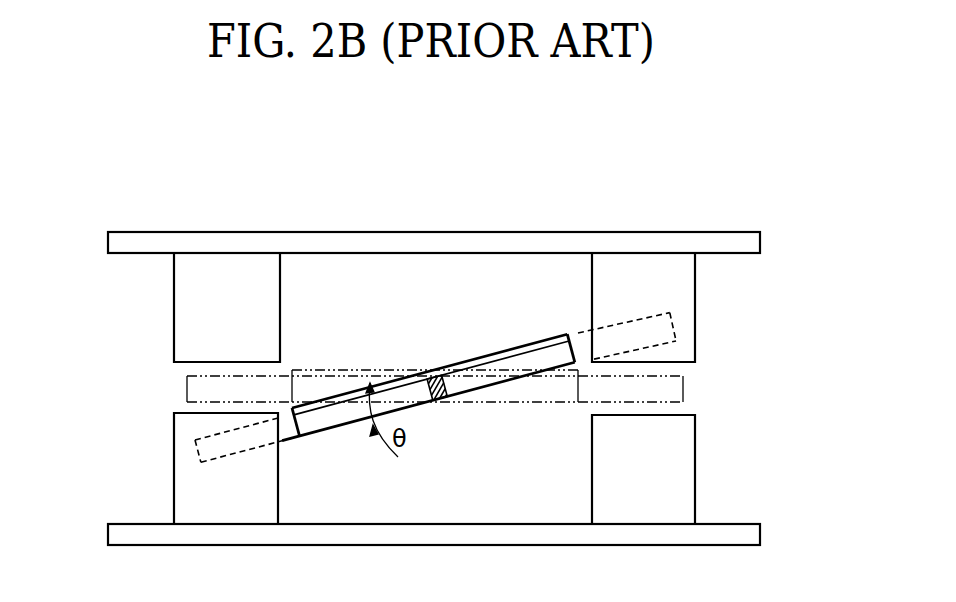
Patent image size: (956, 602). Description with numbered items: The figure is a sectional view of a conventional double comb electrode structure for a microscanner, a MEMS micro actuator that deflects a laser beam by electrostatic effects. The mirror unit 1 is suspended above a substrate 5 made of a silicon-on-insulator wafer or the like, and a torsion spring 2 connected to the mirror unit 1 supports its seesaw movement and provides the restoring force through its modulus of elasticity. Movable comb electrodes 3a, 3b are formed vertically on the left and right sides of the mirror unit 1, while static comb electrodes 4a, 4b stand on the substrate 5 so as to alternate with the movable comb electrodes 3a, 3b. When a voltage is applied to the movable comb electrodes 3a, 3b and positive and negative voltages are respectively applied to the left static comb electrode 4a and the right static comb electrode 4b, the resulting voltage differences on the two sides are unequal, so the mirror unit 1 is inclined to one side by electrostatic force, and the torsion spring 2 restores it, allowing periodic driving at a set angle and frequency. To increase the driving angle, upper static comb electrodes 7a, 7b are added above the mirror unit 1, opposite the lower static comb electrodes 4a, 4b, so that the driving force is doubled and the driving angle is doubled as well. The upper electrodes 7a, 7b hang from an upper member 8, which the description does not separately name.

The mirror unit 1 is at (547, 338).
The torsion spring 2 is at (440, 370).
The left movable comb electrode 3a is at (207, 448).
The right movable comb electrode 3b is at (673, 332).
The left static comb electrode 4a is at (200, 498).
The right static comb electrode 4b is at (668, 475).
The substrate 5 is at (743, 535).
The upper static comb electrode 7a is at (195, 312).
The upper static comb electrode 7b is at (675, 280).
The upper plate 8 is at (740, 243).